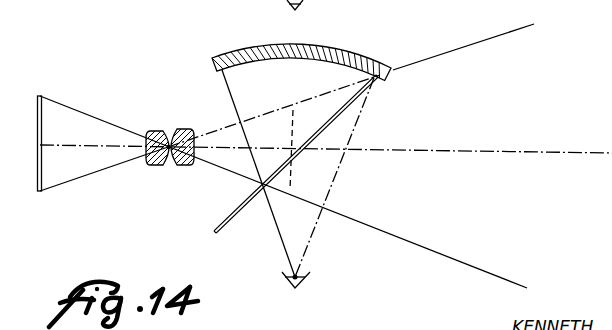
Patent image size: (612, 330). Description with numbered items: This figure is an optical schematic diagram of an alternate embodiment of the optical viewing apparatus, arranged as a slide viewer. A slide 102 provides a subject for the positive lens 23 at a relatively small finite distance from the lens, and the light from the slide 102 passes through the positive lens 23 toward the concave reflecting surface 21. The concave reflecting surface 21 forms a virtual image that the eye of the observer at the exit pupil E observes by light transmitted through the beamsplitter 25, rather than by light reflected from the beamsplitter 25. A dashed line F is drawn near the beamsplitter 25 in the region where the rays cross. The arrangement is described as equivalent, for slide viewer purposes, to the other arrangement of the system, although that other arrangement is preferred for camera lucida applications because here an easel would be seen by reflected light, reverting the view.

The slide 102 is at (42, 178).
The positive lens 23 is at (199, 95).
The concave reflecting surface 21 is at (293, 59).
The beamsplitter 25 is at (250, 203).
The exit pupil E is at (160, 164).
The focal plane F is at (300, 130).